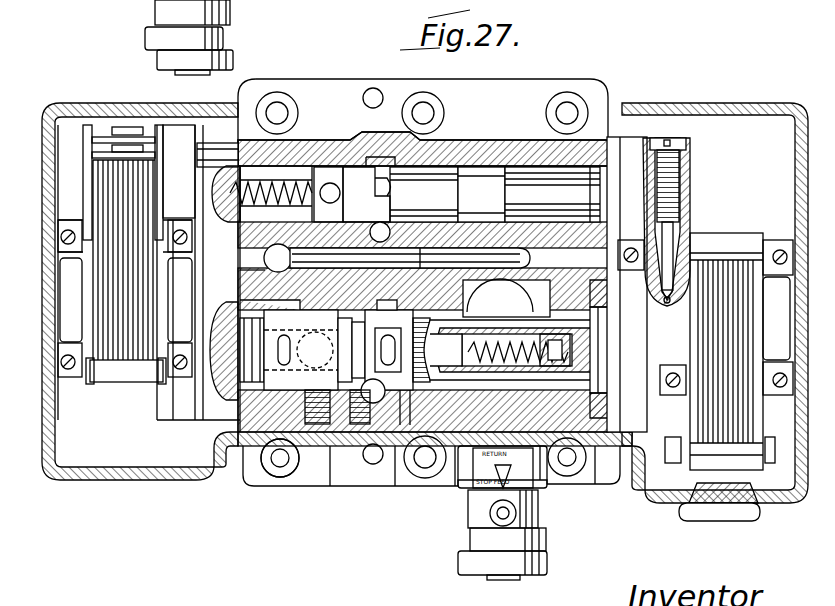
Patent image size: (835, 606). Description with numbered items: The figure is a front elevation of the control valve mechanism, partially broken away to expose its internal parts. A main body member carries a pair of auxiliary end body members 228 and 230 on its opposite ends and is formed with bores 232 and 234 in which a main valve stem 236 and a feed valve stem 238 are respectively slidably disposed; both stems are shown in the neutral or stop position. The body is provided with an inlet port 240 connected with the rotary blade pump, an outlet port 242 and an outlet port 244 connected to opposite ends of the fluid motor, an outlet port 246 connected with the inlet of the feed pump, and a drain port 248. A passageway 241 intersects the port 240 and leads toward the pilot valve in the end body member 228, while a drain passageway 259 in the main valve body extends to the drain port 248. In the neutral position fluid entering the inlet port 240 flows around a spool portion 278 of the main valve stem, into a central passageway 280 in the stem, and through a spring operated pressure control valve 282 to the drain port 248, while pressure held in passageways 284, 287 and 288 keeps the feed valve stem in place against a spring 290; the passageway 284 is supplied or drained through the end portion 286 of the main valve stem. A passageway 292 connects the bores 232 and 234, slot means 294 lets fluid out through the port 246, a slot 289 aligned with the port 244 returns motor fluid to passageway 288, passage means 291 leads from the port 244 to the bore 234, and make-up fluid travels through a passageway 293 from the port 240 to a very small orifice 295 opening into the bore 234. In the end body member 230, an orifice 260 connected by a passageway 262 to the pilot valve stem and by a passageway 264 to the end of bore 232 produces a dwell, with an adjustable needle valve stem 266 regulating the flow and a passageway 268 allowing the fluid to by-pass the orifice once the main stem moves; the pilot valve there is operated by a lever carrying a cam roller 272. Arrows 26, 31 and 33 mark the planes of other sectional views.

The auxiliary end body member 228 is at (227, 163).
The auxiliary end body member 230 is at (625, 135).
The bore 232 is at (240, 390).
The bore 234 is at (592, 150).
The main valve stem 236 is at (277, 382).
The feed valve stem 238 is at (492, 163).
The inlet port 240 is at (380, 395).
The passageway 241 is at (240, 407).
The outlet port 242 is at (405, 200).
The outlet port 244 is at (282, 472).
The outlet port 246 is at (318, 195).
The drain port 248 is at (616, 232).
The drain passageway 259 is at (205, 318).
The orifice 260 is at (690, 297).
The passageway 262 is at (672, 306).
The passageway 264 is at (668, 290).
The adjustable needle valve stem 266 is at (670, 245).
The passageway 268 is at (640, 230).
The cam roller 272 is at (735, 513).
The spool portion 278 is at (398, 430).
The central passageway 280 is at (418, 405).
The pressure control valve 282 is at (515, 363).
The passageway 284 is at (723, 44).
The end portion 286 is at (268, 297).
The passageway 287 is at (481, 194).
The passageway 288 is at (552, 194).
The slot 289 is at (283, 356).
The spring 290 is at (238, 173).
The passage means 291 is at (252, 270).
The passageway 292 is at (424, 194).
The passageway 293 is at (408, 258).
The slot means 294 is at (357, 185).
The orifice 295 is at (383, 197).
The section indicator 26 is at (520, 307).
The section line 31 is at (226, 77).
The section line 33 is at (628, 56).